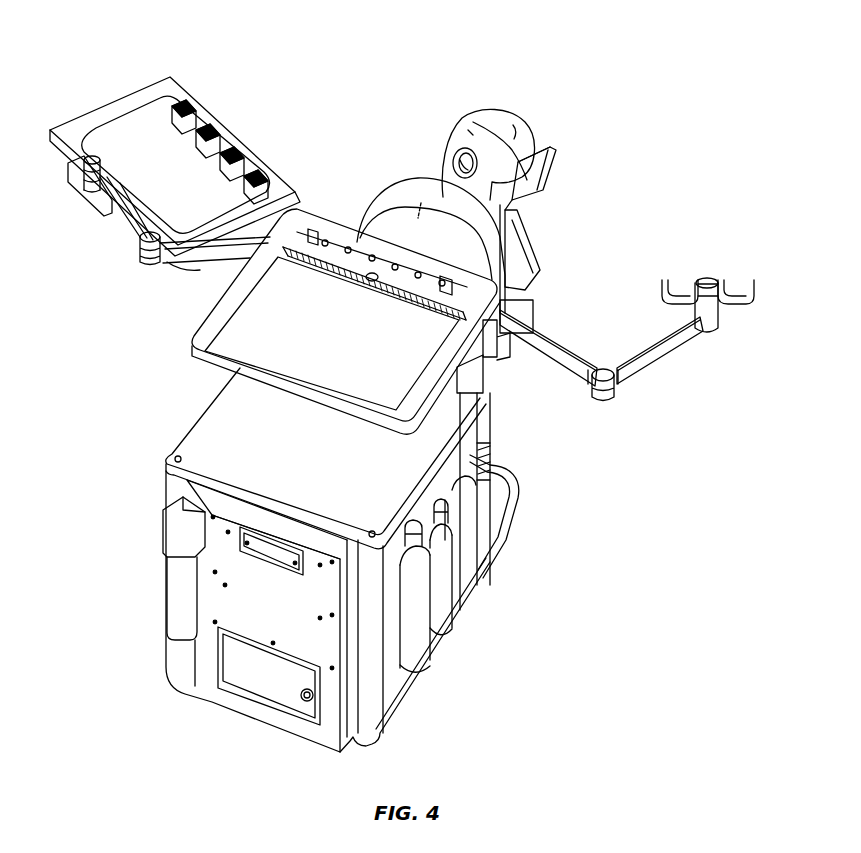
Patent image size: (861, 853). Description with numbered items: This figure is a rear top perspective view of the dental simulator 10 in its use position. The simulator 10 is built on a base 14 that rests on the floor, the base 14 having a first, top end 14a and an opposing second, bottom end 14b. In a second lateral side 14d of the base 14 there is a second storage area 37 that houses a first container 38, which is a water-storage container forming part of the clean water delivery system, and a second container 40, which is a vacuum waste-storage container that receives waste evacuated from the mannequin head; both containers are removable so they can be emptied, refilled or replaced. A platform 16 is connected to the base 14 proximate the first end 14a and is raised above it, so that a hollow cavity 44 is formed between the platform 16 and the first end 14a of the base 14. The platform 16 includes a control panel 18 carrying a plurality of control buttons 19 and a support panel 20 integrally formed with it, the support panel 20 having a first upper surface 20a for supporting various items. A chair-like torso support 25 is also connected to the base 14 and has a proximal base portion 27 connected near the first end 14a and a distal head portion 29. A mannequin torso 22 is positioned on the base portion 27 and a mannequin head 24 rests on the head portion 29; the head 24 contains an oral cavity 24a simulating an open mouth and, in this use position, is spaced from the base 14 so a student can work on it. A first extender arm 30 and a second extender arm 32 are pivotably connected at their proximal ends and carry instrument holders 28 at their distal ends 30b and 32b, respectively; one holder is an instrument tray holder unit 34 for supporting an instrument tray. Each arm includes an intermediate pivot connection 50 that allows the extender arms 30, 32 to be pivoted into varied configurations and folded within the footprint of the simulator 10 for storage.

The simulator 10 is at (230, 36).
The base 14 is at (222, 428).
The first end 14a is at (203, 455).
The second end 14b is at (517, 518).
The second lateral side 14d is at (480, 550).
The platform 16 is at (250, 333).
The control panel 18 is at (325, 240).
The control button 19 is at (372, 255).
The support panel 20 is at (440, 367).
The first upper surface 20a is at (332, 333).
The mannequin torso 22 is at (402, 180).
The mannequin head 24 is at (507, 110).
The oral cavity 24a is at (457, 160).
The torso support 25 is at (538, 178).
The proximal base portion 27 is at (531, 285).
The instrument holder 28 is at (130, 100).
The distal head portion 29 is at (549, 155).
The first extender arm 30 is at (130, 222).
The second distal end 30b is at (73, 180).
The second extender arm 32 is at (552, 348).
The second distal end 32b is at (701, 330).
The instrument tray holder unit 34 is at (88, 115).
The second storage area 37 is at (458, 477).
The first container 38 is at (443, 610).
The second container 40 is at (417, 647).
The cavity 44 is at (440, 428).
The intermediate pivot connection 50 is at (148, 263).